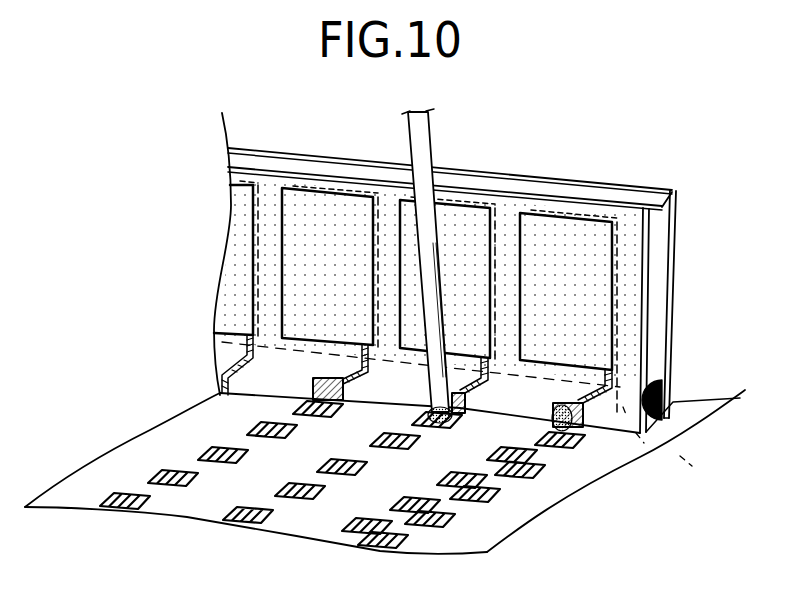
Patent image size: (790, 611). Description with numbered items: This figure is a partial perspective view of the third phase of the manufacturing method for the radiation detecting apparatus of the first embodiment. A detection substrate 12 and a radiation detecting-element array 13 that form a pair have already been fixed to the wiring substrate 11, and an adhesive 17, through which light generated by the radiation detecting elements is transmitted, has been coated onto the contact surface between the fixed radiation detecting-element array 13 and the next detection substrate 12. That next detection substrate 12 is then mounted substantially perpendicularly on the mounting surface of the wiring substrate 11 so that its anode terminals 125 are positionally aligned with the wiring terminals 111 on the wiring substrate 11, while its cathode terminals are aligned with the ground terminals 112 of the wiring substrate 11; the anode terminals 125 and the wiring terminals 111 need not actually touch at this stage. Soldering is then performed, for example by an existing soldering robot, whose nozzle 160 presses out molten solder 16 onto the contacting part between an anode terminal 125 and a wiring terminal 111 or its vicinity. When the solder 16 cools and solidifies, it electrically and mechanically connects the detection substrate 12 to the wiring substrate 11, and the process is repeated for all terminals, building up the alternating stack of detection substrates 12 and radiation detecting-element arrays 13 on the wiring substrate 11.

The wiring substrate 11 is at (460, 540).
The wiring terminals 111 is at (427, 428).
The ground terminals 112 is at (567, 453).
The detection substrate 12 is at (587, 205).
The anode terminals 125 is at (466, 404).
The radiation detecting-element array 13 is at (622, 198).
The solder 16 is at (446, 424).
The nozzle 160 is at (440, 136).
The adhesive 17 is at (684, 460).